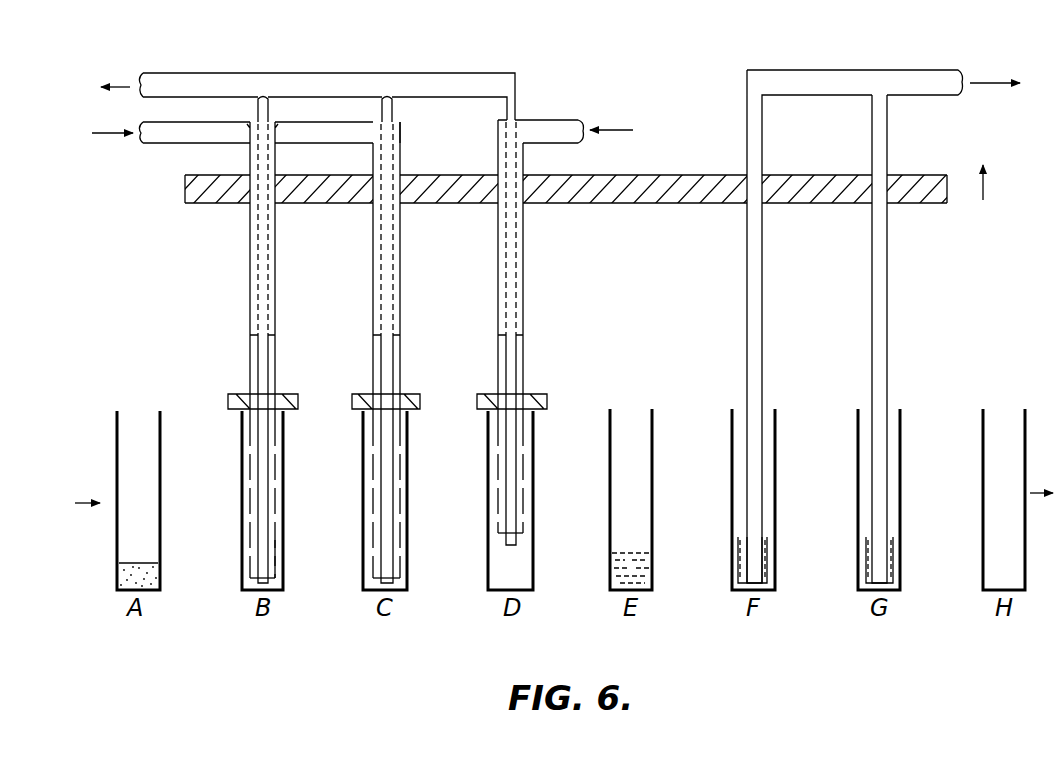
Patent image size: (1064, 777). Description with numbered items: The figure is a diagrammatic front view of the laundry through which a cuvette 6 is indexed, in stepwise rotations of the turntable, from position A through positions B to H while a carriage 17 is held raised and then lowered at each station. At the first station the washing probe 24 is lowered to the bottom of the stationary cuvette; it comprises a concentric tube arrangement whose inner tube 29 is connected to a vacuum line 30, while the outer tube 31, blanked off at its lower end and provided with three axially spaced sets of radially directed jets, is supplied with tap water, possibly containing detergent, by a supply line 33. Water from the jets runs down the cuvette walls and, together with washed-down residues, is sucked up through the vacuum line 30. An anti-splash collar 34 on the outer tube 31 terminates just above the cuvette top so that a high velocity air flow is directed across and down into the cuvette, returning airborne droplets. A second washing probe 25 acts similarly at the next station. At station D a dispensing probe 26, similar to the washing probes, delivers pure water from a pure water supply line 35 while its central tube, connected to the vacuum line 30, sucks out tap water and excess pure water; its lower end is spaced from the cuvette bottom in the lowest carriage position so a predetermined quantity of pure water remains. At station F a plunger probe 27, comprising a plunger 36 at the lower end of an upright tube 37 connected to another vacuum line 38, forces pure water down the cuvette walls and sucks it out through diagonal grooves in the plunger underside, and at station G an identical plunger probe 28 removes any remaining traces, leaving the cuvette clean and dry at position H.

The cuvette 6 is at (163, 456).
The carriage 17 is at (678, 175).
The washing probe 24 is at (264, 362).
The washing probe 25 is at (372, 549).
The dispensing probe 26 is at (498, 513).
The plunger probe 27 is at (748, 556).
The plunger probe 28 is at (878, 450).
The inner tube 29 is at (270, 352).
The vacuum line 30 is at (232, 80).
The outer tube 31 is at (295, 350).
The supply line 33 is at (185, 134).
The anti-splash collar 34 is at (240, 398).
The pure water supply line 35 is at (550, 128).
The plunger 36 is at (770, 581).
The upright tube 37 is at (760, 506).
The vacuum line 38 is at (806, 82).